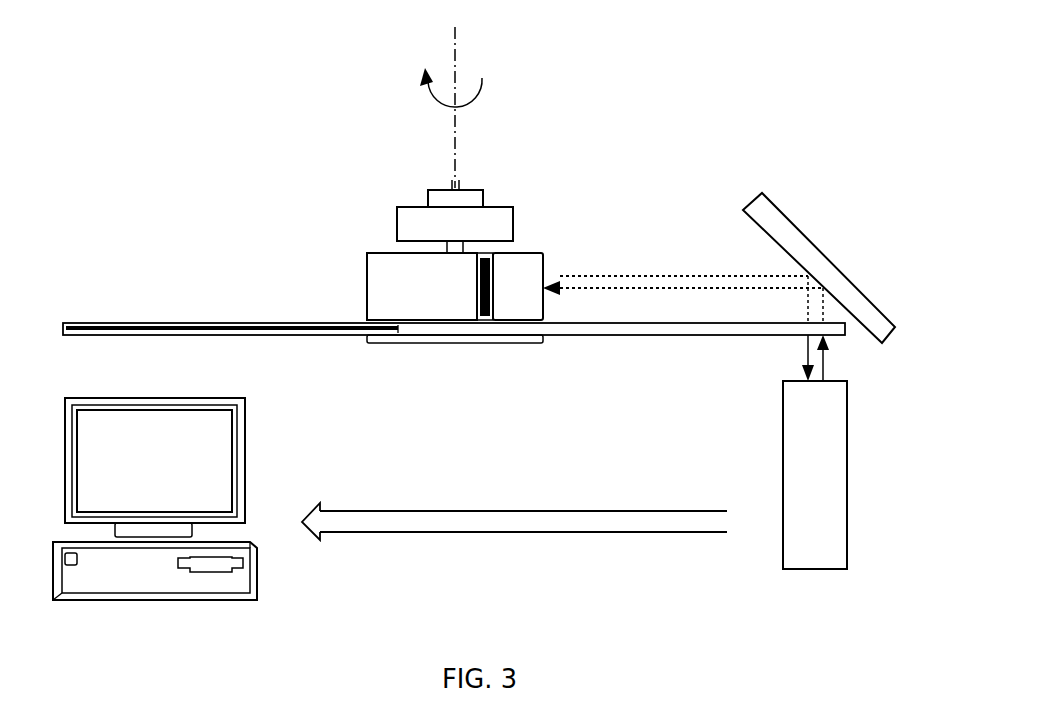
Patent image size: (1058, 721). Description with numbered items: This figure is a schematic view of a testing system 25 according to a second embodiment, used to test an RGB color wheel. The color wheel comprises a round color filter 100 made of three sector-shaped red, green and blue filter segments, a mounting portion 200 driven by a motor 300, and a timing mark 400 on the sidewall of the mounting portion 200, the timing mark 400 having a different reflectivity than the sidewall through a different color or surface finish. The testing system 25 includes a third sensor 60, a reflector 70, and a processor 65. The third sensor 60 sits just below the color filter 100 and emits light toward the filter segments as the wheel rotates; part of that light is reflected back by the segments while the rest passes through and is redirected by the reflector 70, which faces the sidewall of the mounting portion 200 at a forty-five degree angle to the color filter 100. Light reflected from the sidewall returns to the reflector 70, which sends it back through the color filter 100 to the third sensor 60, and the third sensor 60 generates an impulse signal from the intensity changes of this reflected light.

The testing system 25 is at (316, 165).
The third sensor 60 is at (835, 457).
The processor 65 is at (225, 467).
The reflector 70 is at (845, 292).
The color filter 100 is at (225, 318).
The mounting portion 200 is at (532, 253).
The motor 300 is at (462, 187).
The timing mark 400 is at (477, 293).